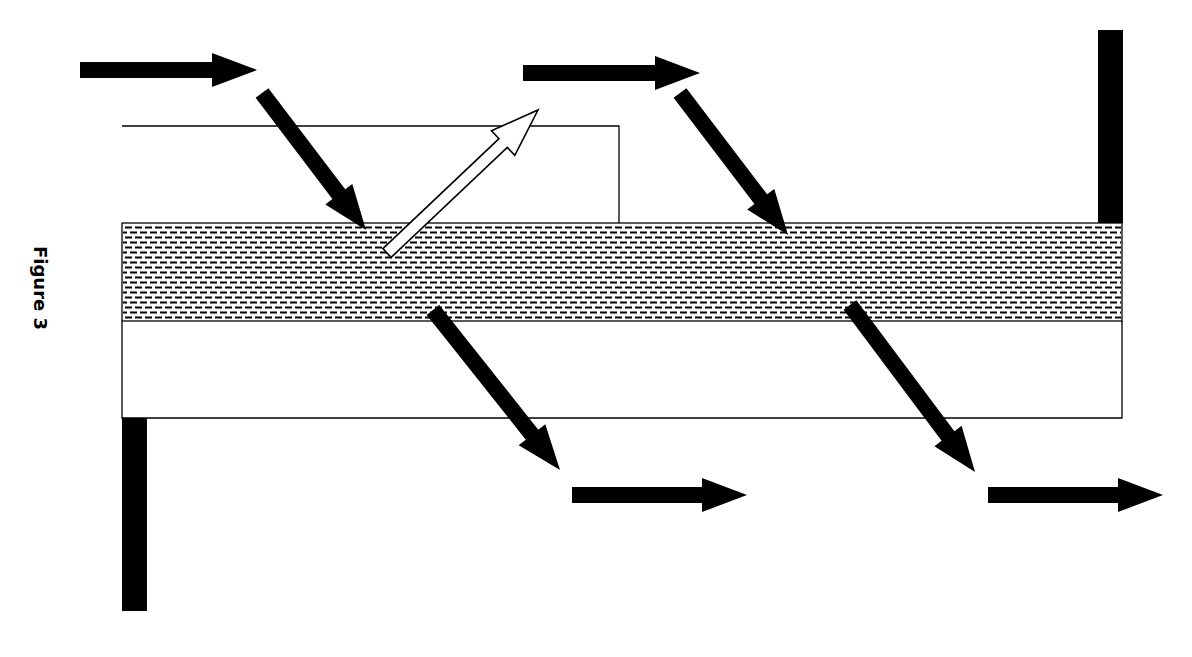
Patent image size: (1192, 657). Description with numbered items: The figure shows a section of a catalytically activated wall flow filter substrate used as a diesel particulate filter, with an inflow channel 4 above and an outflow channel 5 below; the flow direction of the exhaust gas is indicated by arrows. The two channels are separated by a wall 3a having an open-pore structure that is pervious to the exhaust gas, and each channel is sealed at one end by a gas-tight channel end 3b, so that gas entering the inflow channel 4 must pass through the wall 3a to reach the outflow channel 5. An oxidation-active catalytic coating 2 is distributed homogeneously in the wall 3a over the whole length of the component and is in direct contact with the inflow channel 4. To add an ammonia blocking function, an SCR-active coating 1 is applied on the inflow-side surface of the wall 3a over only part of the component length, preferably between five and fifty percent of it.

The SCR-active coating 1 is at (455, 183).
The oxidation-active catalytic coating 2 is at (622, 272).
The wall 3a is at (622, 320).
The gas-tight channel end 3b is at (1097, 103).
The inflow channel 4 is at (486, 144).
The outflow channel 5 is at (708, 406).